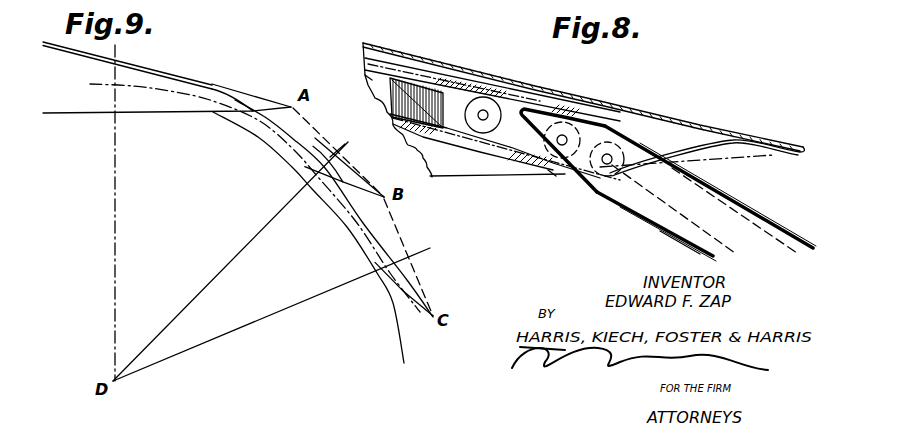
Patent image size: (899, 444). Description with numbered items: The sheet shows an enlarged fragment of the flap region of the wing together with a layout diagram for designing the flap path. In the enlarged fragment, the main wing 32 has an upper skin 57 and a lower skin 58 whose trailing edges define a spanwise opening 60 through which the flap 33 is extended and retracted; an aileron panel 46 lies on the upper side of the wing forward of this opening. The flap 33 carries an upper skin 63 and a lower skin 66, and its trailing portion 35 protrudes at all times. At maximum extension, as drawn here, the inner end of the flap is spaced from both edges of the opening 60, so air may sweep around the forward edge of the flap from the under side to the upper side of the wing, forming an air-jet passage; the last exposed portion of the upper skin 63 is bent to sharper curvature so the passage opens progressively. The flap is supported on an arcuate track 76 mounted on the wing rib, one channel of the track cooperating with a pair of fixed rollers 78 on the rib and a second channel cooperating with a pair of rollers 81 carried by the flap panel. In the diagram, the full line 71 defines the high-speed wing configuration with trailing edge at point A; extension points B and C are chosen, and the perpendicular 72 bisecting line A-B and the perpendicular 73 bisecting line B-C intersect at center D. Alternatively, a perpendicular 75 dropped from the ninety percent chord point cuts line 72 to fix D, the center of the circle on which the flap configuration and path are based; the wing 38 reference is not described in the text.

In FIG. 8, the main wing 32 is at (416, 43).
In FIG. 8, the flap 33 is at (784, 213).
In FIG. 8, the trailing portion of the flap 35 is at (731, 125).
In FIG. 9, the wing 38 is at (224, 5).
In FIG. 9, the aileron panel 46 is at (187, 79).
In FIG. 8, the aileron panel 46 is at (365, 42).
In FIG. 8, the upper skin of the wing 57 is at (460, 63).
In FIG. 8, the lower skin of the wing 58 is at (463, 175).
In FIG. 8, the opening 60 is at (563, 181).
In FIG. 8, the upper skin of the flap 63 is at (731, 194).
In FIG. 8, the lower skin of the flap 66 is at (687, 238).
In FIG. 9, the full line defining wing configuration 71 is at (249, 93).
In FIG. 9, the perpendicular bisecting line A-B 72 is at (273, 219).
In FIG. 9, the perpendicular bisecting line B-C 73 is at (300, 300).
In FIG. 9, the perpendicular from the 90% chord point 75 is at (117, 200).
In FIG. 8, the arcuate track 76 is at (367, 74).
In FIG. 8, the fixed rollers 78 is at (588, 108).
In FIG. 8, the rollers carried by the flap panel 81 is at (567, 115).